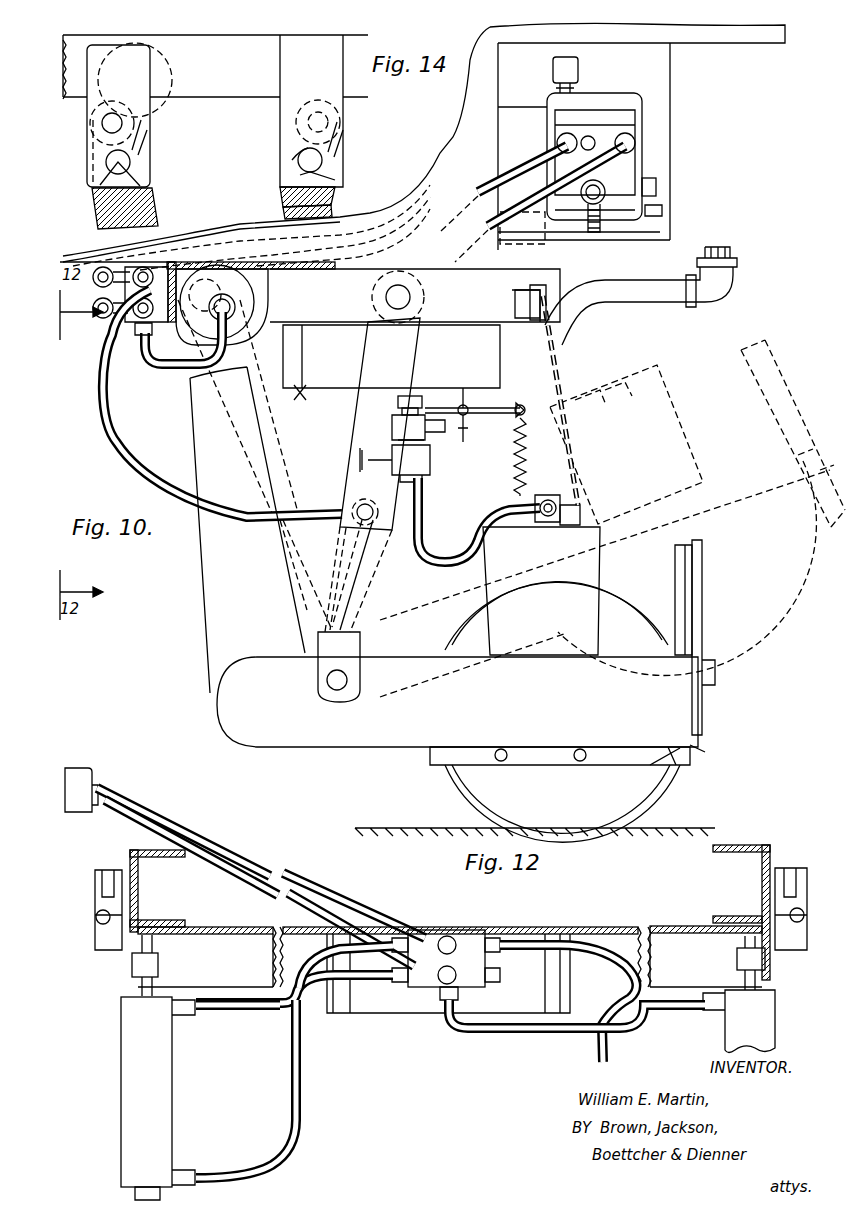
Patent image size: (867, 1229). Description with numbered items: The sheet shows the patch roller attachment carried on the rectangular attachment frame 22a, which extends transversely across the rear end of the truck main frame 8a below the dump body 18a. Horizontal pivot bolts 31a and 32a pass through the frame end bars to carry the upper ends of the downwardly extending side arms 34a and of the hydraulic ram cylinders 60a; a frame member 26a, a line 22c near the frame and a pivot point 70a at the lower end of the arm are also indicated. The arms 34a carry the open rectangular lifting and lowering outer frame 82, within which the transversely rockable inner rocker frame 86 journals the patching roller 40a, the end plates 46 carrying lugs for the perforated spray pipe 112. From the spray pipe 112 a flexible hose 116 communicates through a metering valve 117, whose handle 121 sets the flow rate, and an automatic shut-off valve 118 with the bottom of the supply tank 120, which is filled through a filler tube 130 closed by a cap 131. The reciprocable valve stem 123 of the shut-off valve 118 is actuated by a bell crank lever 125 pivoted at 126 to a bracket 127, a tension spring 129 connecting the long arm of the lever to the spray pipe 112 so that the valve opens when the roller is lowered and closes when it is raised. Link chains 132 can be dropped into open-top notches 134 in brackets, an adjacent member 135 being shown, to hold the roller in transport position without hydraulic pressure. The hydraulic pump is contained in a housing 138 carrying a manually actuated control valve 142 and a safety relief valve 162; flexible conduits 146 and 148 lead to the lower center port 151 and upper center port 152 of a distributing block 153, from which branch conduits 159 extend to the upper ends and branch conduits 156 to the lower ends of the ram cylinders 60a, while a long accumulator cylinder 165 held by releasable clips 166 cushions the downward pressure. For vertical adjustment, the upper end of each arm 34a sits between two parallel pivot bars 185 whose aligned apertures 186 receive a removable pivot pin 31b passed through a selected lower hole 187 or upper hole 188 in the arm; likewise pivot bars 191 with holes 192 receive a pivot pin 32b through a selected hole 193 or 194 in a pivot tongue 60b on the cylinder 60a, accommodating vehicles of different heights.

In FIG. 14, the truck main frame 8a is at (228, 58).
In FIG. 14, the platform 18a is at (751, 43).
In FIG. 14, the attachment frame 22a is at (343, 97).
In FIG. 10, the hose 22c is at (118, 348).
In FIG. 10, the beam 26a is at (352, 306).
In FIG. 10, the pivot bolts 31a is at (196, 391).
In FIG. 14, the removable pivot pin 31b is at (92, 196).
In FIG. 10, the removable pivot pin 31b is at (348, 740).
In FIG. 10, the pivot bolts 32a is at (399, 475).
In FIG. 12, the pivot bolts 32a is at (132, 968).
In FIG. 14, the removable pivot pin 32b is at (300, 155).
In FIG. 14, the side arm 34a is at (96, 222).
In FIG. 10, the side arm 34a is at (220, 590).
In FIG. 10, the patching roller 40a is at (625, 797).
In FIG. 10, the vertical end plates 46 is at (682, 373).
In FIG. 14, the ram cylinder 60a is at (324, 207).
In FIG. 10, the ram cylinder 60a is at (372, 345).
In FIG. 12, the ram cylinder 60a is at (132, 1086).
In FIG. 14, the pivot tongue 60b is at (336, 186).
In FIG. 10, the pivot lug 70a is at (327, 681).
In FIG. 10, the lifting and lowering outer frame 82 is at (702, 634).
In FIG. 10, the inner rocker frame 86 is at (668, 622).
In FIG. 10, the spray pipe 112 is at (532, 526).
In FIG. 10, the flexible hose 116 is at (428, 512).
In FIG. 10, the metering valve 117 is at (400, 450).
In FIG. 10, the shut-off valve 118 is at (398, 425).
In FIG. 10, the supply tank 120 is at (281, 530).
In FIG. 10, the handle 121 is at (392, 460).
In FIG. 10, the valve stem 123 is at (465, 430).
In FIG. 10, the bell crank lever 125 is at (475, 420).
In FIG. 10, the pivot 126 is at (461, 381).
In FIG. 10, the bracket 127 is at (398, 402).
In FIG. 10, the tension spring 129 is at (516, 452).
In FIG. 10, the filler tube 130 is at (647, 292).
In FIG. 14, the cap or plug 131 is at (731, 250).
In FIG. 10, the link chains 132 is at (552, 440).
In FIG. 10, the vertical notches 134 is at (540, 288).
In FIG. 10, the bracket 135 is at (520, 302).
In FIG. 14, the pump housing 138 is at (640, 122).
In FIG. 12, the pump housing 138 is at (82, 768).
In FIG. 14, the control valve 142 is at (656, 186).
In FIG. 14, the hydraulic conduit 146 is at (560, 180).
In FIG. 12, the hydraulic conduit 146 is at (222, 858).
In FIG. 14, the hydraulic conduit 148 is at (510, 185).
In FIG. 12, the hydraulic conduit 148 is at (222, 838).
In FIG. 12, the lower center port 151 is at (440, 992).
In FIG. 12, the upper center port 152 is at (448, 935).
In FIG. 12, the distributing block 153 is at (476, 930).
In FIG. 12, the flexible branch conduits 156 is at (308, 958).
In FIG. 12, the flexible branch conduits 159 is at (240, 1010).
In FIG. 14, the safety pressure relief valve 162 is at (578, 68).
In FIG. 14, the accumulator cylinder 165 is at (170, 73).
In FIG. 10, the accumulator cylinder 165 is at (250, 282).
In FIG. 12, the accumulator cylinder 165 is at (398, 1012).
In FIG. 10, the clamping bands or clips 166 is at (240, 300).
In FIG. 12, the clamping bands or clips 166 is at (346, 1013).
In FIG. 14, the pivot bars 185 is at (128, 140).
In FIG. 14, the pivot apertures 186 is at (152, 194).
In FIG. 14, the lower pivot aperture 187 is at (104, 160).
In FIG. 14, the upper pivot hole 188 is at (101, 122).
In FIG. 14, the pivot bars 191 is at (342, 140).
In FIG. 14, the pivot holes 192 is at (325, 170).
In FIG. 14, the pivot hole 193 is at (292, 172).
In FIG. 14, the pivot hole 194 is at (330, 120).